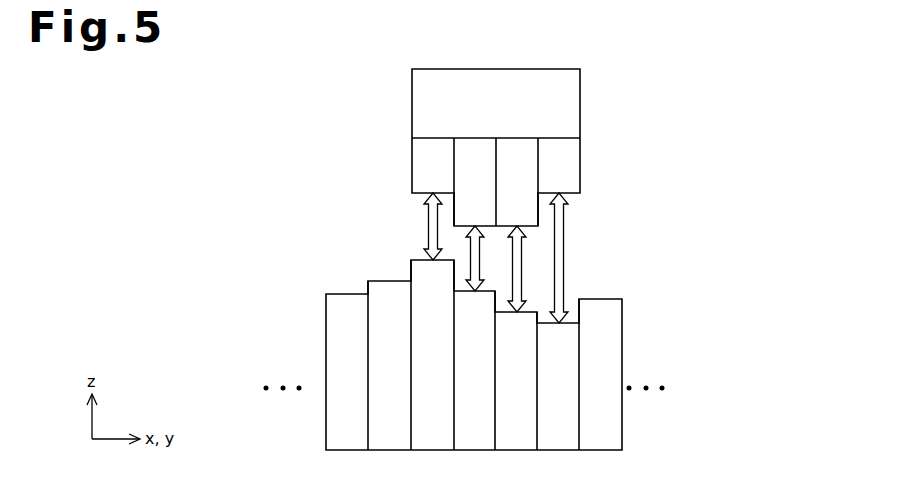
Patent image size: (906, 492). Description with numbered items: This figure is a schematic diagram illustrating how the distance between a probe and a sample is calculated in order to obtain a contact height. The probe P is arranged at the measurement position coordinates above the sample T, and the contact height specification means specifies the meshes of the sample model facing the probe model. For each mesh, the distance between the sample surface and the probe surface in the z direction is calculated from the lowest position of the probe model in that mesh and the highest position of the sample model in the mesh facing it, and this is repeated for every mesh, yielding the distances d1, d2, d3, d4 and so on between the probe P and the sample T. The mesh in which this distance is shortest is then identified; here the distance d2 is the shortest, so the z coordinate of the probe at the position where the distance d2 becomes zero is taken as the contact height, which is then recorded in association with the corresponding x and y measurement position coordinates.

The probe P is at (581, 93).
The sample T is at (634, 326).
The distance d1 is at (427, 210).
The distance d2 is at (470, 242).
The distance d3 is at (522, 268).
The distance d4 is at (564, 219).